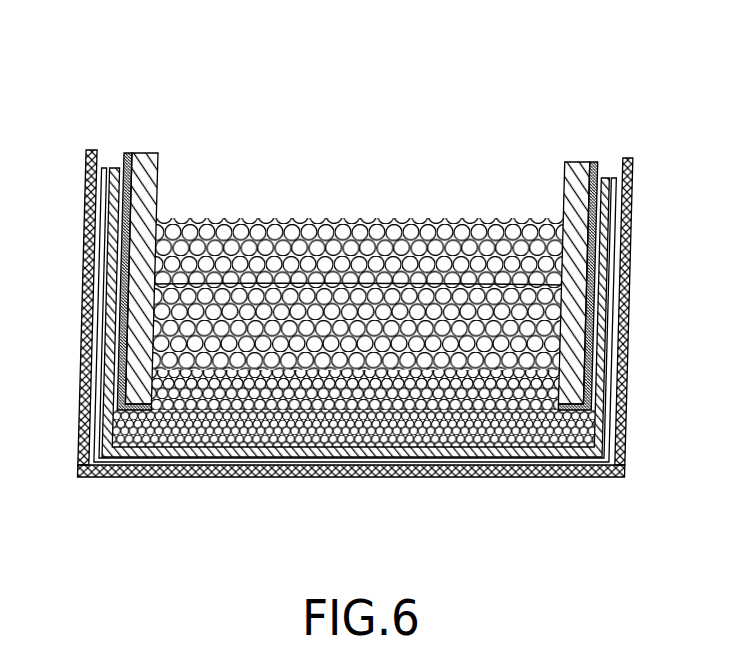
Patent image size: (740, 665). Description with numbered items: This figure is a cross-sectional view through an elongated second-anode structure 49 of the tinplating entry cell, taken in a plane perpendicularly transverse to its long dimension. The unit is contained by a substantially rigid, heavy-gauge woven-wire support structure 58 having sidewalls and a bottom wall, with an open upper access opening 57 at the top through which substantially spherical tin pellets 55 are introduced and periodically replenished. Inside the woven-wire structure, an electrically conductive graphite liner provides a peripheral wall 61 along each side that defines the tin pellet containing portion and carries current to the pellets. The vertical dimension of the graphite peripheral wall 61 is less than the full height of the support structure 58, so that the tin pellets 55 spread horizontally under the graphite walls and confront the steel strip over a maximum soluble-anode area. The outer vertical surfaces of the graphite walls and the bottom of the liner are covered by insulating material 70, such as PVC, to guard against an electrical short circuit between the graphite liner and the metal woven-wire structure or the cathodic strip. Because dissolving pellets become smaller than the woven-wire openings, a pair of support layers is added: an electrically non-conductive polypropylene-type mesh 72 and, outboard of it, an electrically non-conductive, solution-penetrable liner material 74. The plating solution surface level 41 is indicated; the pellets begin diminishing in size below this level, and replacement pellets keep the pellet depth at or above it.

The upper access opening 57 is at (355, 130).
The tin pellets 55 is at (402, 218).
The graphite peripheral wall 61 is at (156, 192).
The plating solution surface level 41 is at (84, 287).
The second-anode structure 49 is at (285, 510).
The woven-wire support structure 58 is at (632, 198).
The solution-penetrable liner material 74 is at (101, 150).
The electrically-non-conductive mesh 72 is at (111, 168).
The insulating material 70 is at (126, 152).